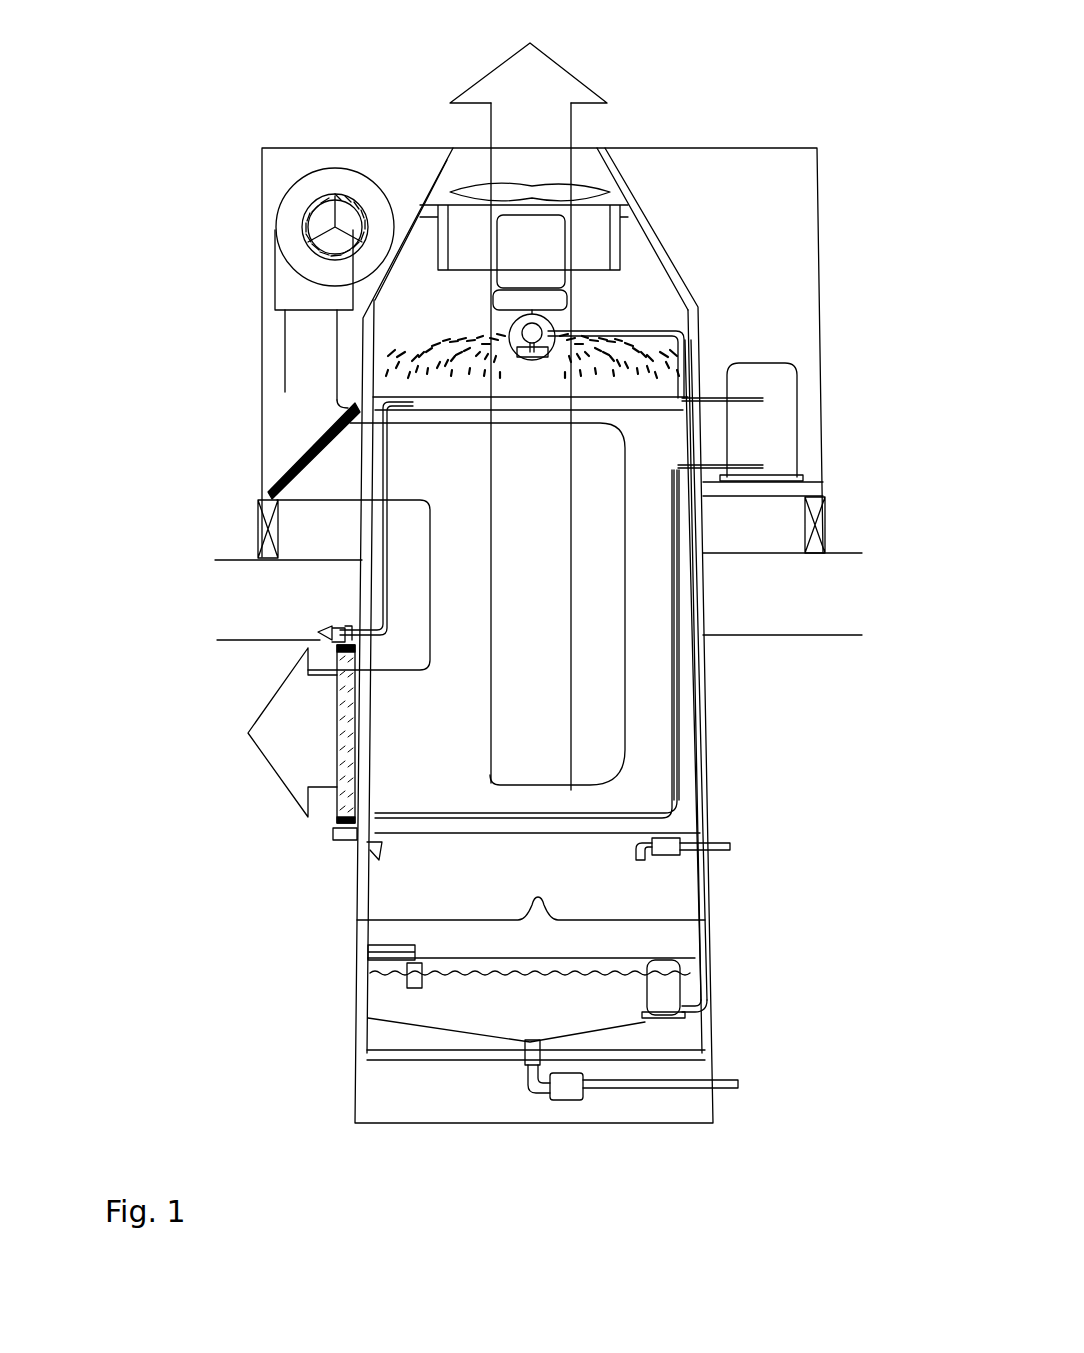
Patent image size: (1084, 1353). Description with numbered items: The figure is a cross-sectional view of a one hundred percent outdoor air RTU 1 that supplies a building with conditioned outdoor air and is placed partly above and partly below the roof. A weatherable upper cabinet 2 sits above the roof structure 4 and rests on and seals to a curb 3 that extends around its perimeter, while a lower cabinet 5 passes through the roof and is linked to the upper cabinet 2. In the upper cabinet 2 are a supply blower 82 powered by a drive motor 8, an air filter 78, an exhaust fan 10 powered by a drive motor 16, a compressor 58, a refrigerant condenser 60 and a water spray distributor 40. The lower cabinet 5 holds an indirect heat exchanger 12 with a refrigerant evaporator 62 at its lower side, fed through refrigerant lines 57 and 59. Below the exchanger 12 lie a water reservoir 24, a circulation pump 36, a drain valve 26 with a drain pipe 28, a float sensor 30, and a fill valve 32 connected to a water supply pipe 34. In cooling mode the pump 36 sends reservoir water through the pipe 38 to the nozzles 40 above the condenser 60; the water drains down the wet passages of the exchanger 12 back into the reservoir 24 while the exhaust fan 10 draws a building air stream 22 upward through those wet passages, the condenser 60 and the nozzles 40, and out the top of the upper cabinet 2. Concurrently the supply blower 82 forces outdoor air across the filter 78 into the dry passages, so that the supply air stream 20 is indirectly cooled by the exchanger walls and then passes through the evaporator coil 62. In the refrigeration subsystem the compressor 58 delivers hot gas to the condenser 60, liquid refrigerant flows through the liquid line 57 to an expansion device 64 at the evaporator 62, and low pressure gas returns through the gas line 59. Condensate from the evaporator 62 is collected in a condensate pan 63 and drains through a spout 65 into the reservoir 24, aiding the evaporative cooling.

The outdoor air RTU 1 is at (186, 713).
The upper cabinet 2 is at (345, 148).
The curb 3 is at (257, 527).
The roof structure 4 is at (893, 567).
The lower cabinet 5 is at (710, 1037).
The drive motor 8 is at (312, 244).
The exhaust fan 10 is at (522, 237).
The indirect heat exchanger 12 is at (577, 677).
The drive motor 16 is at (455, 185).
The supply air stream 20 is at (300, 392).
The building air stream 22 is at (535, 105).
The water reservoir 24 is at (433, 1010).
The drain valve 26 is at (565, 1092).
The drain pipe 28 is at (650, 1087).
The float sensor 30 is at (420, 990).
The fill valve 32 is at (668, 845).
The water supply pipe 34 is at (790, 855).
The circulation pump 36 is at (670, 985).
The pipe 38 is at (707, 765).
The water spray distributor 40 is at (547, 323).
The liquid line 57 is at (363, 560).
The compressor 58 is at (770, 380).
The gas line 59 is at (683, 657).
The refrigerant condenser 60 is at (632, 397).
The refrigerant evaporator 62 is at (340, 822).
The condensate pan 63 is at (340, 840).
The expansion device 64 is at (330, 627).
The spout 65 is at (382, 848).
The air filter 78 is at (285, 462).
The supply blower 82 is at (290, 291).